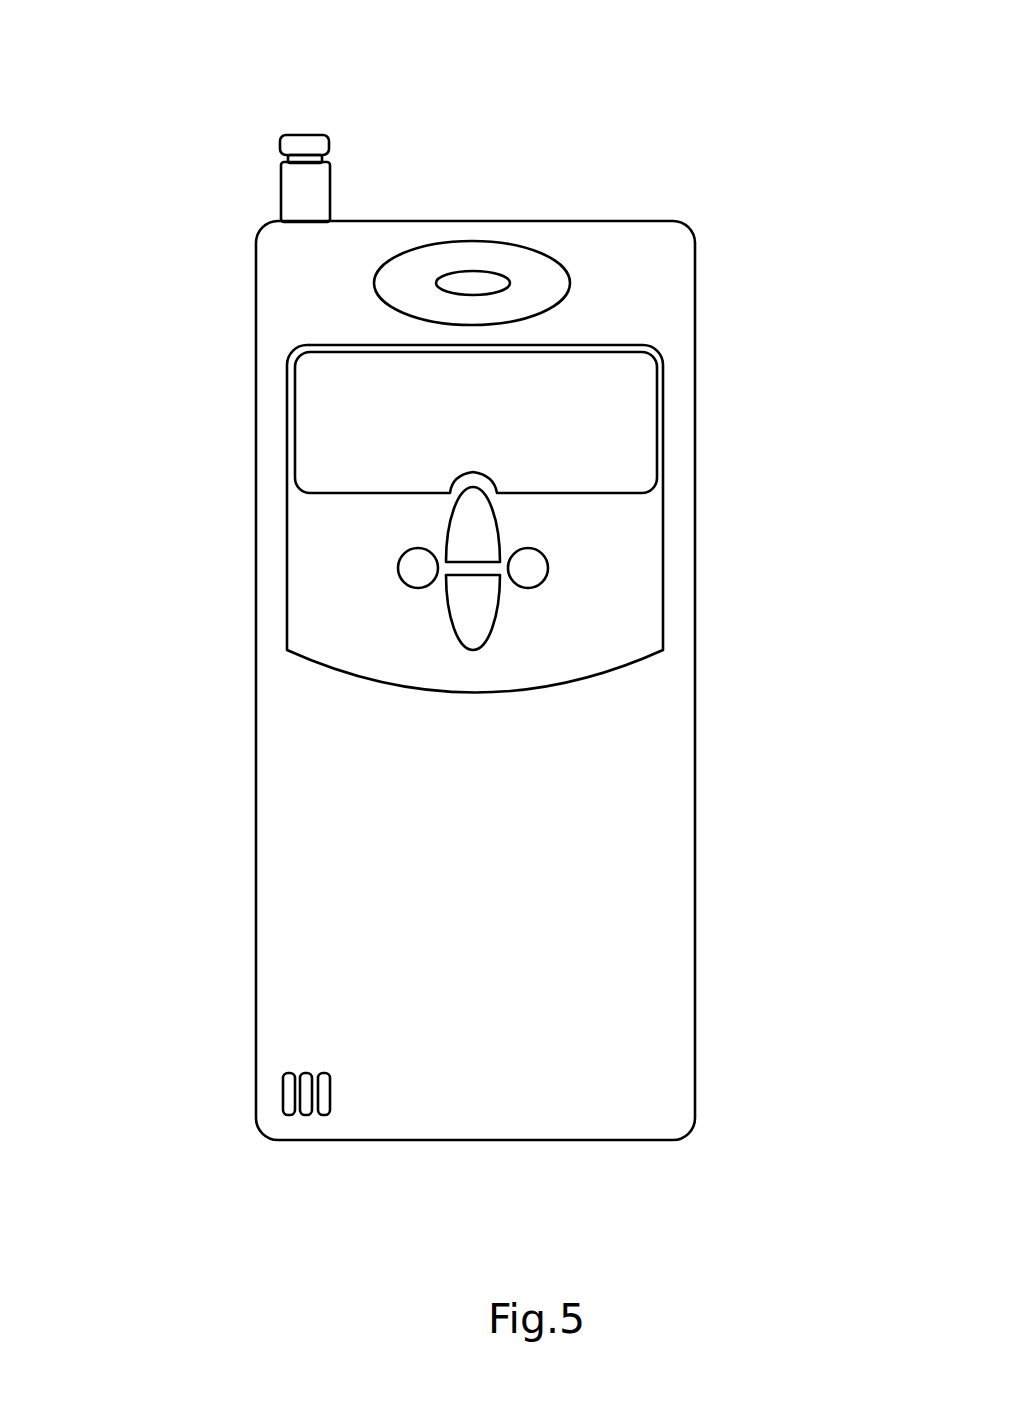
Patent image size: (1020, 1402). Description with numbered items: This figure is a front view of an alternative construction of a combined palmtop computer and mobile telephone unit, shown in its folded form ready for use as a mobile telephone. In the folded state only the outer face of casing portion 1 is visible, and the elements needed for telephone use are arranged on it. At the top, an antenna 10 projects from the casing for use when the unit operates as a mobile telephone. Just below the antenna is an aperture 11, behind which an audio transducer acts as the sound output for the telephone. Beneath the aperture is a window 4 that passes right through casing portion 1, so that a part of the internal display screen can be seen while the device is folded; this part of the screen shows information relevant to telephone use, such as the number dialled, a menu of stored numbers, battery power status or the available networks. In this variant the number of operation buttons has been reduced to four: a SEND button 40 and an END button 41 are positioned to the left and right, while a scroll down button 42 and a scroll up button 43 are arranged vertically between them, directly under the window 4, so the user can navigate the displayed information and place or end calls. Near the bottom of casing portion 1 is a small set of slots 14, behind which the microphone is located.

The casing portion 1 is at (335, 860).
The window 4 is at (338, 430).
The antenna 10 is at (308, 145).
The aperture 11 is at (480, 283).
The slots 14 is at (283, 1102).
The SEND button 40 is at (410, 572).
The END button 41 is at (538, 566).
The scroll down button 42 is at (478, 632).
The scroll up button 43 is at (470, 512).